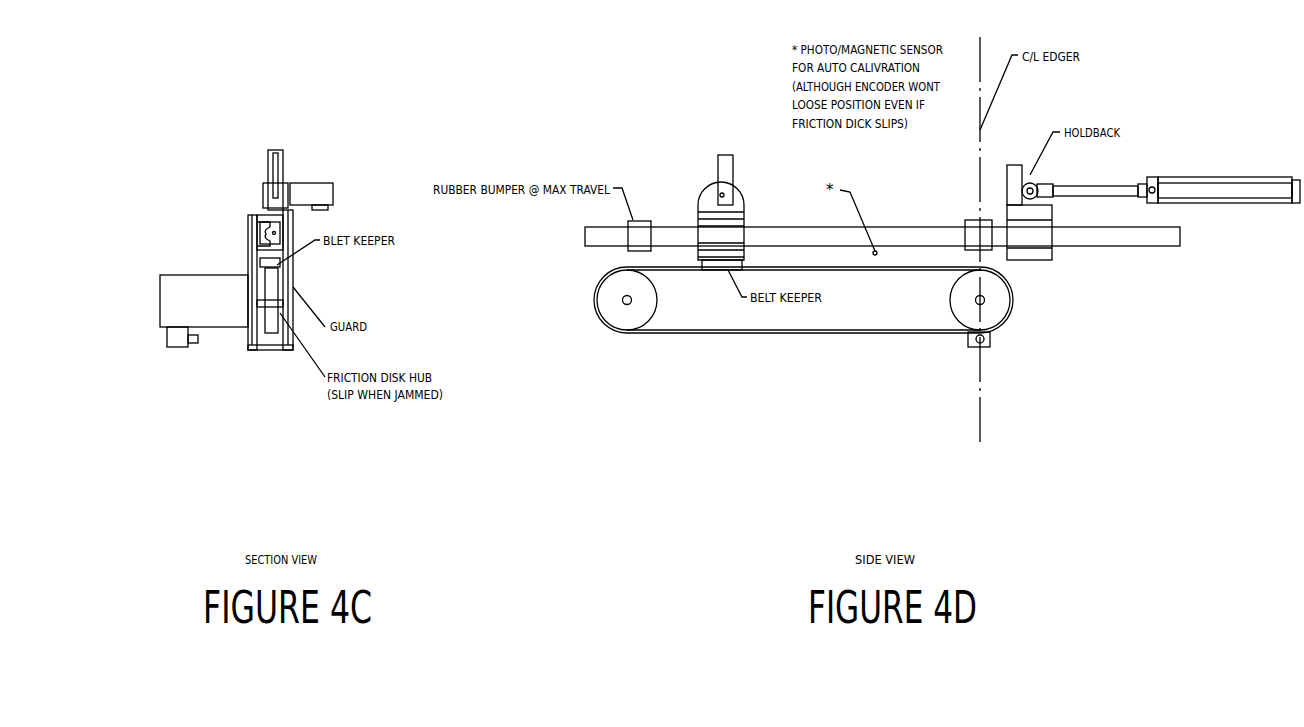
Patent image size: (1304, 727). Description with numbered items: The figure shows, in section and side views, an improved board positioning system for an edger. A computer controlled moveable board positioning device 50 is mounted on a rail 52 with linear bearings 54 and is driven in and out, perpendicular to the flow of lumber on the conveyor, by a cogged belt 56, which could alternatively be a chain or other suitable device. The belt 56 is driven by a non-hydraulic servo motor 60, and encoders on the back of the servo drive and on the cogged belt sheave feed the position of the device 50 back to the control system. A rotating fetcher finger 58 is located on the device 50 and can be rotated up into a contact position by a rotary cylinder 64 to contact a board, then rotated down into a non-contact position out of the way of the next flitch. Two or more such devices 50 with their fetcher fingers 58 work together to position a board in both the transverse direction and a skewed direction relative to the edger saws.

In FIG. 4C, the board positioning device 50 is at (243, 389).
In FIG. 4C, the rail 52 is at (209, 213).
In FIG. 4D, the rail 52 is at (859, 193).
In FIG. 4C, the linear bearing 54 is at (194, 198).
In FIG. 4C, the cogged belt 56 is at (275, 273).
In FIG. 4D, the cogged belt 56 is at (803, 332).
In FIG. 4C, the fetcher finger 58 is at (282, 157).
In FIG. 4D, the fetcher finger 58 is at (723, 155).
In FIG. 4C, the servo motor 60 is at (142, 288).
In FIG. 4D, the servo motor 60 is at (1074, 354).
In FIG. 4C, the rotary cylinder 64 is at (377, 173).